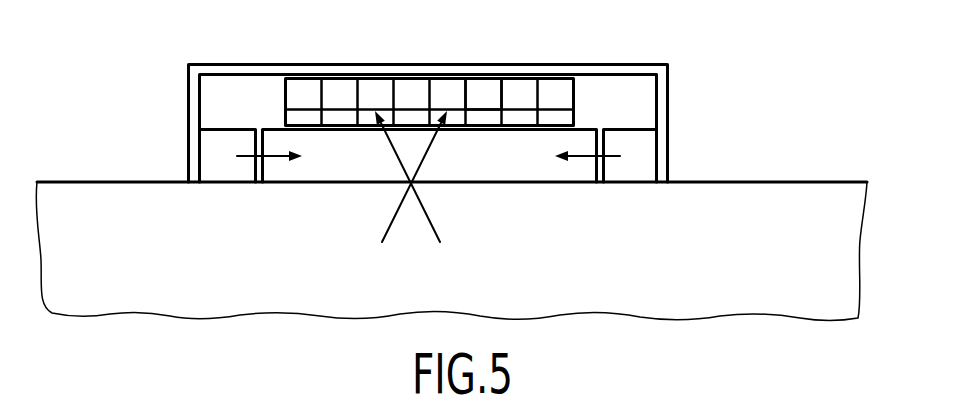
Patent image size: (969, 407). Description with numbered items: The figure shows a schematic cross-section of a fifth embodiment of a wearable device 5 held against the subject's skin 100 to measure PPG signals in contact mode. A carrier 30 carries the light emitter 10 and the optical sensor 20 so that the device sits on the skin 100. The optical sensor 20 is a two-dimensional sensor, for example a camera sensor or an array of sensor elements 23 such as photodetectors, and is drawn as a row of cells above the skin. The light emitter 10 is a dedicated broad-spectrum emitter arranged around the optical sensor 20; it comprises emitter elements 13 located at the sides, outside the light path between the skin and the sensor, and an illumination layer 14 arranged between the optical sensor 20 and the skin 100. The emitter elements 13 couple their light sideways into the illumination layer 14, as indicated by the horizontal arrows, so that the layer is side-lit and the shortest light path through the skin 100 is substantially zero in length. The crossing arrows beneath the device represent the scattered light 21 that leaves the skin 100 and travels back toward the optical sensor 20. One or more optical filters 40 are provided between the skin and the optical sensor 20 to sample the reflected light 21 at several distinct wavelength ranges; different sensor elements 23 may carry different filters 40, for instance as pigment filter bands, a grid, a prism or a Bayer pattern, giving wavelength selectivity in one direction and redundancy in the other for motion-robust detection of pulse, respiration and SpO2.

The wearable device 5 is at (740, 28).
The light emitter 10 is at (197, 62).
The emitter elements 13 is at (213, 145).
The illumination layer 14 is at (269, 127).
The optical sensor 20 is at (582, 93).
The scattered light 21 is at (430, 223).
The sensor elements 23 is at (482, 92).
The carrier 30 is at (405, 68).
The optical filters 40 is at (574, 120).
The skin 100 is at (777, 200).